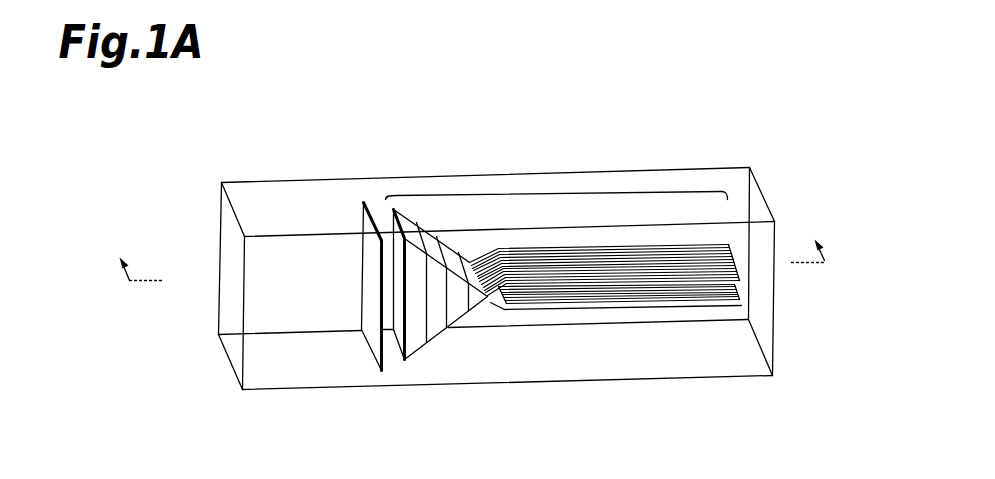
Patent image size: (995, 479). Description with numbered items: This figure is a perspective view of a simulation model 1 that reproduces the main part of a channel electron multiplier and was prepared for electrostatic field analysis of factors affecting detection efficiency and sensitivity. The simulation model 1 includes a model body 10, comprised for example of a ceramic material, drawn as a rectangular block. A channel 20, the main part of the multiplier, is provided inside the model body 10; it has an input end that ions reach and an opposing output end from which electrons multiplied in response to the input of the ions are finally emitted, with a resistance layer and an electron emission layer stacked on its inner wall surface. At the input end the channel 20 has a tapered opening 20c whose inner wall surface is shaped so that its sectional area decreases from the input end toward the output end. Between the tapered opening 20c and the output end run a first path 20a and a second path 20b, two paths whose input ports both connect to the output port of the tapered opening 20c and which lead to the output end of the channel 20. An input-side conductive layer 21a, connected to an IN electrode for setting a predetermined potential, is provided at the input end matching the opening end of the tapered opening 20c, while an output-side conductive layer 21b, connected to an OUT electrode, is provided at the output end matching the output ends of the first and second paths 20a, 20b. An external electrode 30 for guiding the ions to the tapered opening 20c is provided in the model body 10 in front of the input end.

The simulation model 1 is at (617, 135).
The model body 10 is at (698, 167).
The channel 20 is at (553, 190).
The first path 20a is at (650, 303).
The second path 20b is at (723, 240).
The tapered opening 20c is at (460, 323).
The input-side conductive layer 21a is at (392, 330).
The output-side conductive layer 21b is at (742, 297).
The external electrode 30 is at (372, 344).